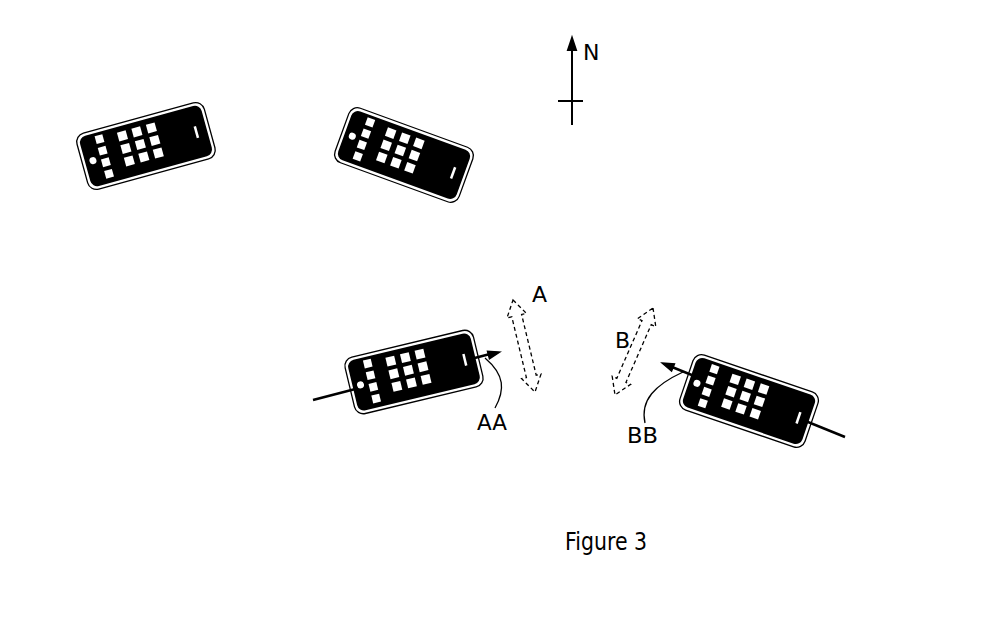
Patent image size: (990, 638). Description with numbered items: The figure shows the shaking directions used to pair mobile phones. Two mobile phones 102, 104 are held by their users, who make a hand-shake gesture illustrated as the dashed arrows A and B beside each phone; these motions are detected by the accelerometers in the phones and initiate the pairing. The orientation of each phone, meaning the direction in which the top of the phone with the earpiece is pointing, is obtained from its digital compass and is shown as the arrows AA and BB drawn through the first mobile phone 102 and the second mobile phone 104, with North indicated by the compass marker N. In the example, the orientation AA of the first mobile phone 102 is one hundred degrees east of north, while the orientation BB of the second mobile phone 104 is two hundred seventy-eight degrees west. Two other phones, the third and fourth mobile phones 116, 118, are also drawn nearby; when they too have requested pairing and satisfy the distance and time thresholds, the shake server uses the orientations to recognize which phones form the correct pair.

The first mobile phone 102 is at (322, 371).
The second mobile phone 104 is at (788, 369).
The third mobile phone 116 is at (142, 177).
The fourth mobile phone 118 is at (347, 160).